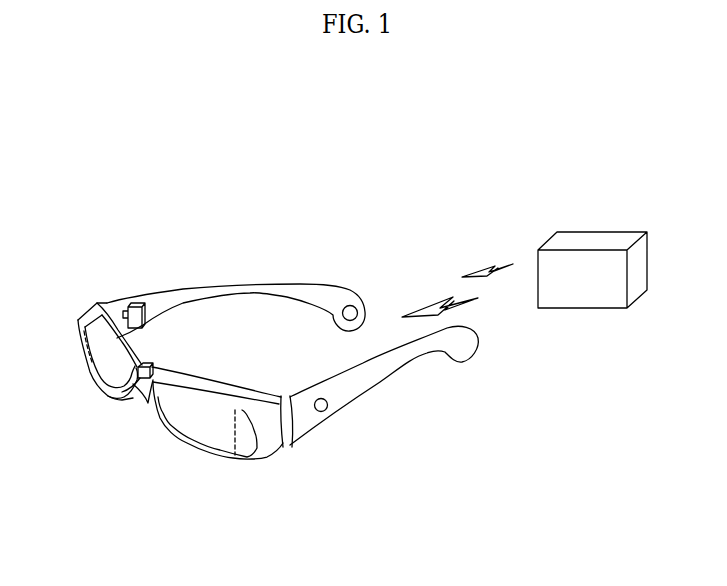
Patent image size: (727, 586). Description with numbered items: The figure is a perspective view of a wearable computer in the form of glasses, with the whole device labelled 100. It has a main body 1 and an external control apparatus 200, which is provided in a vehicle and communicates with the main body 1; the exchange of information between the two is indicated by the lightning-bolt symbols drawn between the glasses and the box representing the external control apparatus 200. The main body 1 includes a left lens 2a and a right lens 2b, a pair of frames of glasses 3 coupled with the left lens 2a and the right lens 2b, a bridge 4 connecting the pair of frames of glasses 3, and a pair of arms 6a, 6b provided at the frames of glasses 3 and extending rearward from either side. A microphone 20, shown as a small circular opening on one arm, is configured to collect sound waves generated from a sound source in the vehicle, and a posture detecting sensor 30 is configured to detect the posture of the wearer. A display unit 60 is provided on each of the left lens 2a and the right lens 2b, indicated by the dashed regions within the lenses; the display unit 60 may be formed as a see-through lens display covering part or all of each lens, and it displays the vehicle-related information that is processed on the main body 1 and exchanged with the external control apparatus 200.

The main body 1 is at (268, 378).
The left lens 2a is at (194, 428).
The right lens 2b is at (100, 376).
The frames of glasses 3 is at (220, 394).
The bridge 4 is at (146, 406).
The arm 6a is at (366, 390).
The arm 6b is at (271, 283).
The microphone 20 is at (325, 411).
The posture detecting sensor 30 is at (110, 372).
The display unit 60 is at (84, 335).
The glasses-type terminal 100 is at (348, 220).
The external control apparatus 200 is at (598, 233).